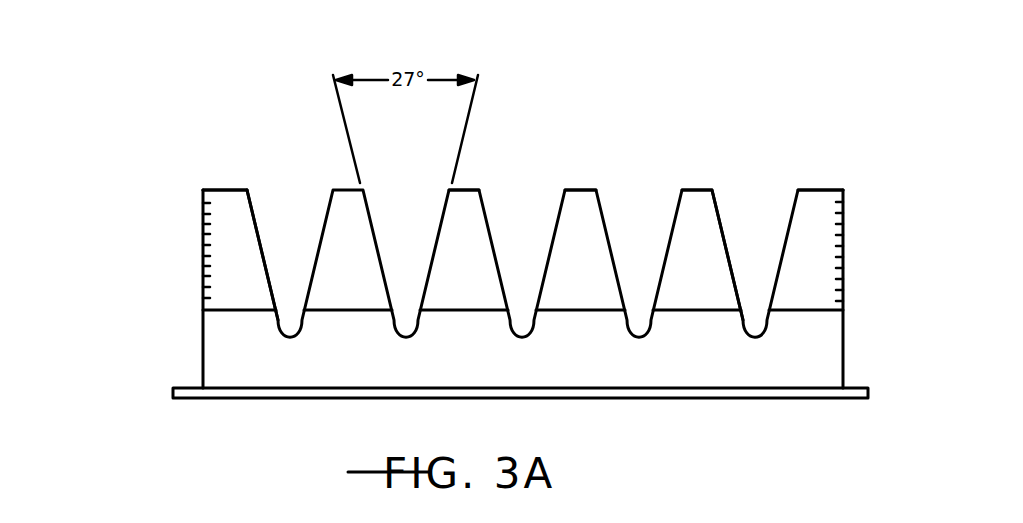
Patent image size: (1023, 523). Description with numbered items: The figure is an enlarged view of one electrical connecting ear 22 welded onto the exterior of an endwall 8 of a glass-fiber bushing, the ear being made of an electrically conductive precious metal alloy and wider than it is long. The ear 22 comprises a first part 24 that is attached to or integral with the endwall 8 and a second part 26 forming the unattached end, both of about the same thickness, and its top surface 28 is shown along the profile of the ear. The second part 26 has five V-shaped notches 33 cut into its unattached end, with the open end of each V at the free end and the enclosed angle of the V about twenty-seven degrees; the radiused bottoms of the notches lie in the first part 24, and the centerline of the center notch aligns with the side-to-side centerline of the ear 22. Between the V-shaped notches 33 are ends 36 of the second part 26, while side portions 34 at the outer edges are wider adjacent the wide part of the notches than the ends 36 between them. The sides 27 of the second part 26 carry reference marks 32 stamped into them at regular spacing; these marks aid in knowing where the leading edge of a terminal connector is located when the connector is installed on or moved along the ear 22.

The endwall 8 is at (627, 398).
The electrical connecting ear 22 is at (528, 252).
The first part 24 is at (217, 362).
The second part 26 is at (218, 240).
The sides 27 is at (845, 252).
The top surface 28 is at (818, 372).
The reference marks 32 is at (203, 216).
The V-shaped notches 33 is at (740, 217).
The side portions 34 is at (223, 278).
The ends 36 is at (573, 190).